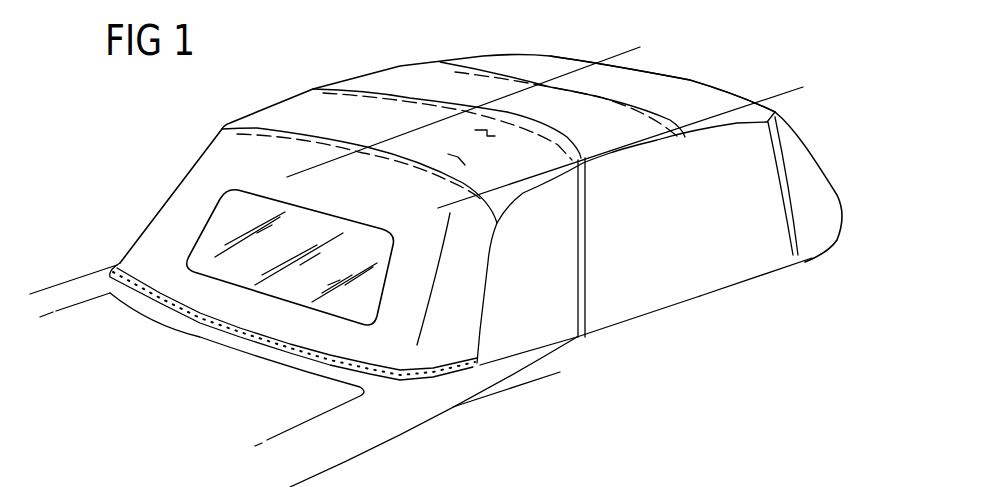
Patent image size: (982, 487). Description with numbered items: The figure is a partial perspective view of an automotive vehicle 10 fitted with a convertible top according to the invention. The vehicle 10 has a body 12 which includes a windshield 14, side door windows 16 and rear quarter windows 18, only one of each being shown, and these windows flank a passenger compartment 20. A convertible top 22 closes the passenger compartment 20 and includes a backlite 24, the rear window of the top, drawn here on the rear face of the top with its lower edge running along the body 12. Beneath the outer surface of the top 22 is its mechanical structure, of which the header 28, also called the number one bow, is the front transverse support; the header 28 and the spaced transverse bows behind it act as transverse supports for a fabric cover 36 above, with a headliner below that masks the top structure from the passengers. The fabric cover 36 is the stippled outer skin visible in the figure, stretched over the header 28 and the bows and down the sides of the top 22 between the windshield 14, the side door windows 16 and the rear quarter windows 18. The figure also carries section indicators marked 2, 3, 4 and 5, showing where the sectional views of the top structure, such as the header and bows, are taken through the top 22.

The automotive vehicle 10 is at (143, 179).
The body 12 is at (87, 285).
The windshield 14 is at (830, 211).
The side door windows 16 is at (640, 302).
The rear quarter windows 18 is at (542, 332).
The passenger compartment 20 is at (727, 283).
The convertible top 22 is at (502, 33).
The backlite 24 is at (368, 313).
The header 28 is at (697, 83).
The fabric cover 36 is at (658, 82).
The section line 2- 2 is at (547, 106).
The section line 3- 3 is at (393, 175).
The section line 4- 4 is at (303, 182).
The section line 5- 5 is at (438, 208).